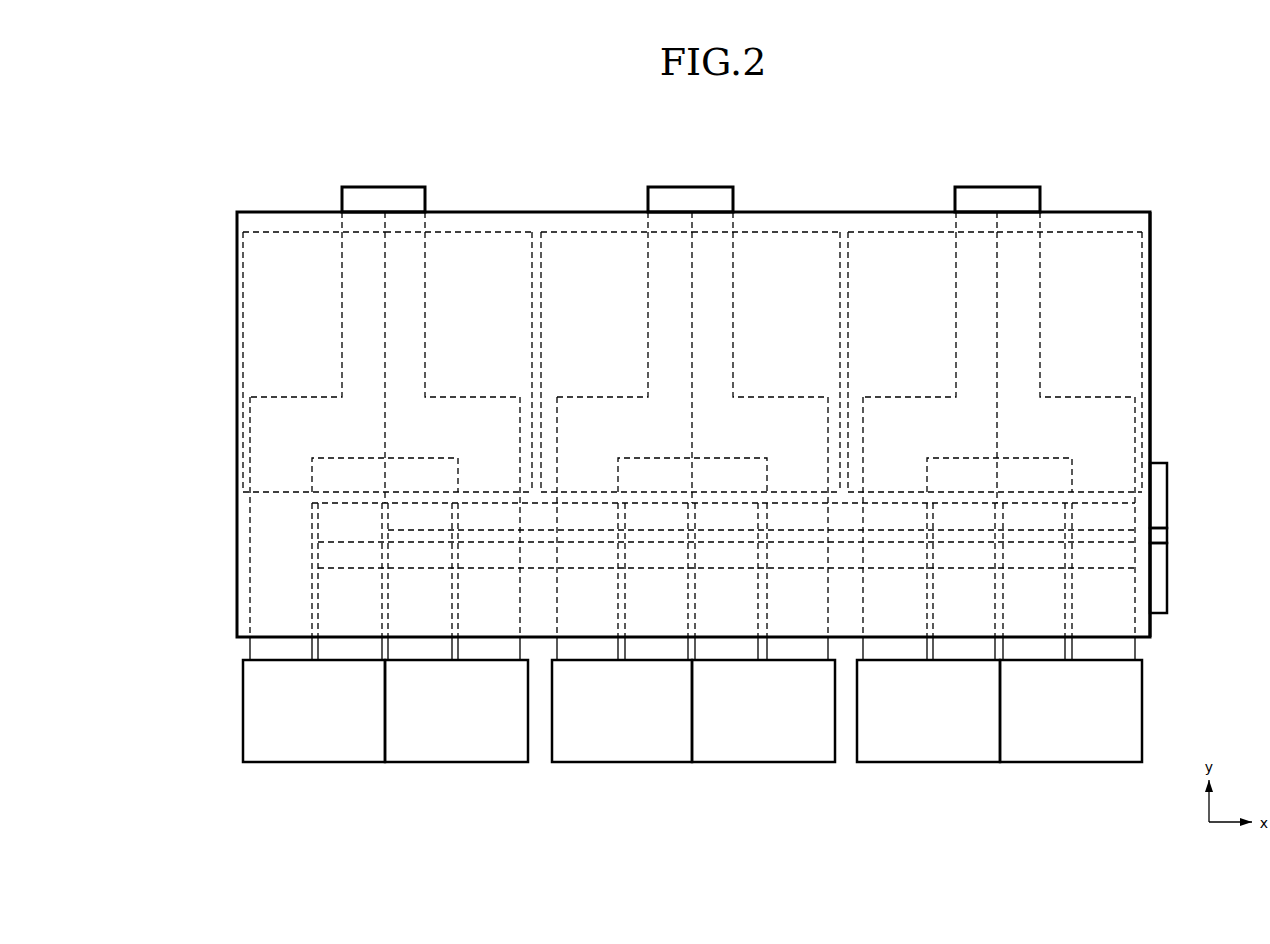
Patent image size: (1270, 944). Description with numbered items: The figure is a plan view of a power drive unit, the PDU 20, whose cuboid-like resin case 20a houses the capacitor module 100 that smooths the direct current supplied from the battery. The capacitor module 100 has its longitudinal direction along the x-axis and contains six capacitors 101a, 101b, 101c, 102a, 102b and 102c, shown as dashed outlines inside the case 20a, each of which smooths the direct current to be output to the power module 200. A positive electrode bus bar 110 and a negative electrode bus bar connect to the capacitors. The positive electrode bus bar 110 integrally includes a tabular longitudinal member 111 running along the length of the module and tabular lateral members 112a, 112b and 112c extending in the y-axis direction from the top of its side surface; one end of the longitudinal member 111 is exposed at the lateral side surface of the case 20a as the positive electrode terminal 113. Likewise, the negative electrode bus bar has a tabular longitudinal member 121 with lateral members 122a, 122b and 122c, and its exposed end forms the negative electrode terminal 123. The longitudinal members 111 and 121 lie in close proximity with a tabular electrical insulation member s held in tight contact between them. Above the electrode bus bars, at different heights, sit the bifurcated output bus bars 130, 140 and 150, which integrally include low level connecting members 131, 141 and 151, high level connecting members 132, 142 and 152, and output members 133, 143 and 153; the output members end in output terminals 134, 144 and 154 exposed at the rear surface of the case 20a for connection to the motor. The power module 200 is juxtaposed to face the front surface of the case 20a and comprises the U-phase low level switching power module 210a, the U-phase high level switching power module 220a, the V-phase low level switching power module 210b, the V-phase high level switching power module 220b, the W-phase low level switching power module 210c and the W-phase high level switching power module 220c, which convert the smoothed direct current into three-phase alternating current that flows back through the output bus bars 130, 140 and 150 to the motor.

The PDU 20 is at (1175, 181).
The case 20a is at (1152, 280).
The capacitor module 100 is at (1168, 343).
The capacitor 101a is at (452, 245).
The capacitor 101b is at (775, 245).
The capacitor 101c is at (1082, 245).
The capacitor 102a is at (285, 245).
The capacitor 102b is at (580, 245).
The capacitor 102c is at (903, 245).
The positive electrode bus bar 110 is at (1190, 505).
The longitudinal member 111 is at (1093, 518).
The lateral member 112a is at (405, 613).
The lateral member 112b is at (712, 620).
The lateral member 112c is at (1020, 620).
The positive electrode terminal 113 is at (1158, 483).
The longitudinal member 121 is at (1167, 605).
The lateral member 122a is at (333, 608).
The lateral member 122b is at (640, 613).
The lateral member 122c is at (945, 613).
The negative electrode terminal 123 is at (1157, 565).
The output bus bar 130 is at (352, 385).
The low level connecting member 131 is at (265, 562).
The high level connecting member 132 is at (490, 477).
The output member 133 is at (425, 342).
The output terminal 134 is at (383, 200).
The output bus bar 140 is at (660, 385).
The low level connecting member 141 is at (590, 470).
The high level connecting member 142 is at (797, 470).
The output member 143 is at (730, 342).
The output terminal 144 is at (690, 200).
The output bus bar 150 is at (965, 385).
The low level connecting member 151 is at (900, 470).
The high level connecting member 152 is at (1103, 476).
The output member 153 is at (1037, 342).
The output terminal 154 is at (997, 200).
The electrical insulation member s is at (1158, 535).
The power module 200 is at (220, 698).
The U-phase low level switching power module 210a is at (295, 745).
The V-phase low level switching power module 210b is at (620, 745).
The W-phase low level switching power module 210c is at (925, 745).
The U-phase high level switching power module 220a is at (450, 745).
The V-phase high level switching power module 220b is at (772, 745).
The W-phase high level switching power module 220c is at (1070, 745).